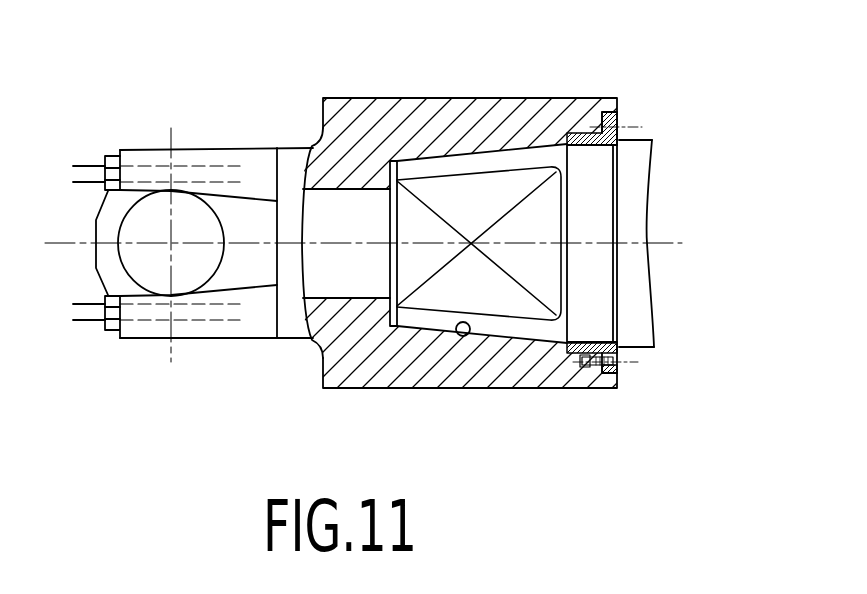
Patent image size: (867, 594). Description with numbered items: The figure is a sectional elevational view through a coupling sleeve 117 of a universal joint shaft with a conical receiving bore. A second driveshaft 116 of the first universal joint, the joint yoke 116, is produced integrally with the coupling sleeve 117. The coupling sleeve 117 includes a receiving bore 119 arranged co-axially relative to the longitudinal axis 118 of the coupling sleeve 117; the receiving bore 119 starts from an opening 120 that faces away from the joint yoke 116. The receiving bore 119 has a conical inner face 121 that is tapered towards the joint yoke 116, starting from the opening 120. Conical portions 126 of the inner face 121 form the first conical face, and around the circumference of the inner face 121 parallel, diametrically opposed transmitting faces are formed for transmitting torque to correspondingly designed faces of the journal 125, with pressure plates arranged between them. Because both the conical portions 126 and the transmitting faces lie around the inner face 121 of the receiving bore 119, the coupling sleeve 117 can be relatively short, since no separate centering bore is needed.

The second driveshaft / joint yoke 116 is at (219, 164).
The coupling sleeve 117 is at (418, 115).
The longitudinal axis 118 is at (668, 247).
The receiving bore 119 is at (551, 150).
The opening 120 is at (623, 201).
The conical inner face 121 is at (456, 334).
The journal 125 is at (488, 214).
The conical portions 126 is at (498, 148).